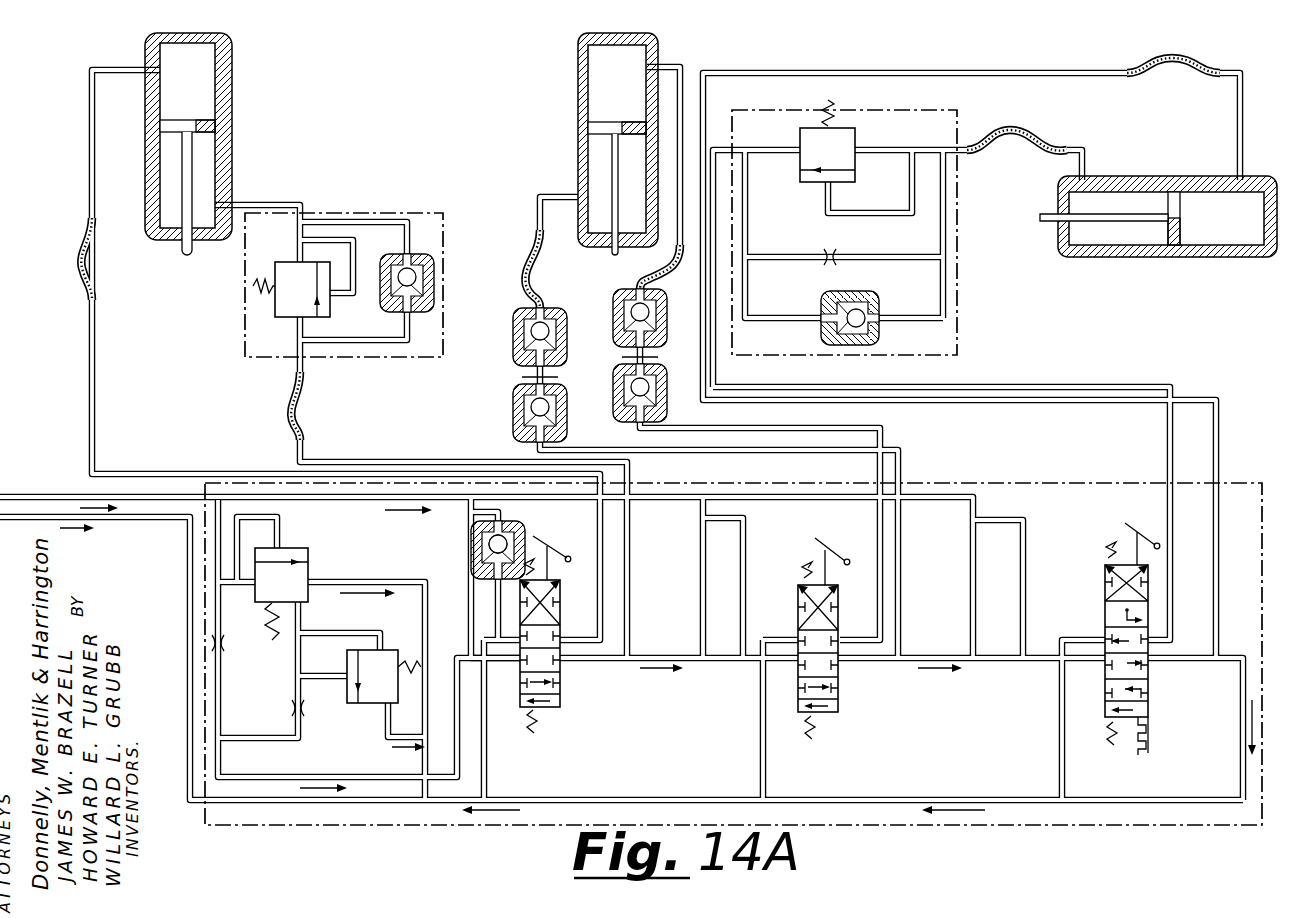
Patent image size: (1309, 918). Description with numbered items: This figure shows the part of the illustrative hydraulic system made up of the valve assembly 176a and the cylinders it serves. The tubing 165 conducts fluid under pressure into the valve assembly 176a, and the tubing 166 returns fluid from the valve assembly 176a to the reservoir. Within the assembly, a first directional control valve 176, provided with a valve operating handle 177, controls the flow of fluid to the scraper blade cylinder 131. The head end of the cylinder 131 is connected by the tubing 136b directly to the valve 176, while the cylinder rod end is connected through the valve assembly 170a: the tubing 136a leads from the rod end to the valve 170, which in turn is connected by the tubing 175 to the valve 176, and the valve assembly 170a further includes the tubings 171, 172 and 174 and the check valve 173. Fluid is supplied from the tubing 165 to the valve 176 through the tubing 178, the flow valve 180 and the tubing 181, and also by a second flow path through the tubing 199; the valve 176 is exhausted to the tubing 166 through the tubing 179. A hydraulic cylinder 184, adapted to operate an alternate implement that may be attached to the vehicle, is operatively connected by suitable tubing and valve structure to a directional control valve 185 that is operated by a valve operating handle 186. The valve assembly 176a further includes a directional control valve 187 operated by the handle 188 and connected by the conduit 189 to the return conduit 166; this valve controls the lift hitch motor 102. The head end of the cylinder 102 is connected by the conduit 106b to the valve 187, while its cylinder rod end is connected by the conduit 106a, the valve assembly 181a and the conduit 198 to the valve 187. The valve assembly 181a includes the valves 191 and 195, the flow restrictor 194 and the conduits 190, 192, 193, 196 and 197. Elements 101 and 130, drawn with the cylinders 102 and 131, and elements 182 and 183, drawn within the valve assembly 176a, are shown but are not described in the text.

The piston rod 101 is at (1050, 212).
The lift hitch motor 102 is at (1175, 250).
The conduit 106a is at (1088, 165).
The conduit 106b is at (1243, 148).
The piston rod 130 is at (184, 252).
The scraper blade cylinder 131 is at (232, 88).
The tubing 136a is at (268, 205).
The tubing 136b is at (118, 70).
The tubing 165 is at (40, 478).
The tubing 166 is at (24, 520).
The valve 170 is at (272, 309).
The valve assembly 170a is at (246, 268).
The tubing 171 is at (325, 242).
The tubing 172 is at (378, 222).
The check valve 173 is at (425, 280).
The tubing 174 is at (340, 345).
The tubing 175 is at (365, 462).
The first directional control valve 176 is at (560, 706).
The valve assembly 176a is at (288, 828).
The valve operating handle 177 is at (555, 546).
The tubing 178 is at (476, 549).
The tubing 179 is at (485, 764).
The flow valve 180 is at (494, 552).
The tubing 181 is at (495, 605).
The valve assembly 181a is at (958, 121).
The pressure compensating valve 182 is at (302, 550).
The relief valve 183 is at (360, 698).
The hydraulic cylinder 184 is at (578, 108).
The directional control valve 185 is at (840, 708).
The valve operating handle 186 is at (838, 548).
The directional control valve 187 is at (1148, 704).
The handle 188 is at (1136, 530).
The conduit 189 is at (1060, 740).
The conduit 190 is at (870, 150).
The valve 191 is at (808, 133).
The conduit 192 is at (828, 216).
The conduit 193 is at (868, 258).
The flow restrictor 194 is at (822, 265).
The valve 195 is at (862, 316).
The conduit 196 is at (946, 292).
The conduit 197 is at (772, 322).
The conduit 198 is at (1080, 388).
The tubing 199 is at (250, 777).